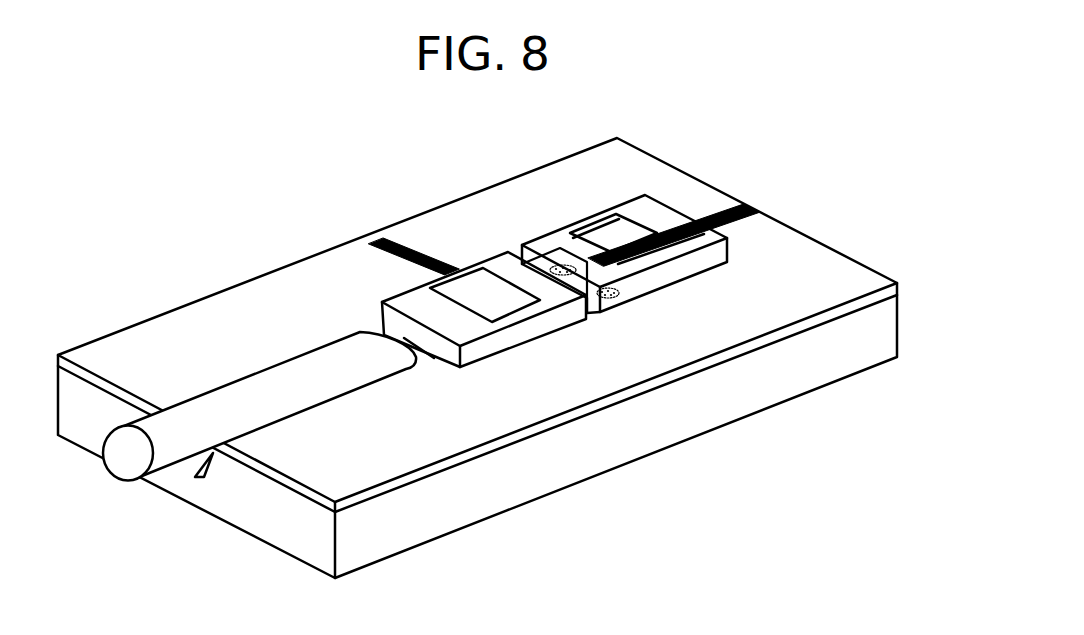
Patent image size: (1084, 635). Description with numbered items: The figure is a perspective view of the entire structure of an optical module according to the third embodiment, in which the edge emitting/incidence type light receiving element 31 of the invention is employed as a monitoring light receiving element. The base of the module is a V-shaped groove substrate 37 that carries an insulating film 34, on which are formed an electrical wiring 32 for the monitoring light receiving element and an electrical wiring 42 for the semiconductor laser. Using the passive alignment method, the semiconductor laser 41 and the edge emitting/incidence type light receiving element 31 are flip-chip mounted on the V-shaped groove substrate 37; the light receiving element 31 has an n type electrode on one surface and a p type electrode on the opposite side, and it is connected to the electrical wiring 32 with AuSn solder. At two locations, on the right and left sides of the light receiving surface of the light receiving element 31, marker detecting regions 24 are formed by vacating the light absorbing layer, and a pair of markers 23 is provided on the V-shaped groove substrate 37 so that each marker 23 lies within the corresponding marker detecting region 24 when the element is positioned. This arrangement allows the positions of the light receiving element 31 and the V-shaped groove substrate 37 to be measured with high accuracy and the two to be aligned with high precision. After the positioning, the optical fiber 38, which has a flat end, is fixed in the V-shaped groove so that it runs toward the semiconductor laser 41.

The markers 23 is at (527, 243).
The marker detecting regions 24 is at (560, 267).
The edge emitting/incidence type light receiving element 31 is at (635, 217).
The electrical wiring for monitoring light receiving element 32 is at (715, 200).
The insulating film 34 is at (620, 393).
The V-shaped groove substrate 37 is at (507, 480).
The optical fiber 38 is at (270, 377).
The semiconductor laser 41 is at (407, 305).
The electrical wiring for semiconductor laser 42 is at (395, 237).